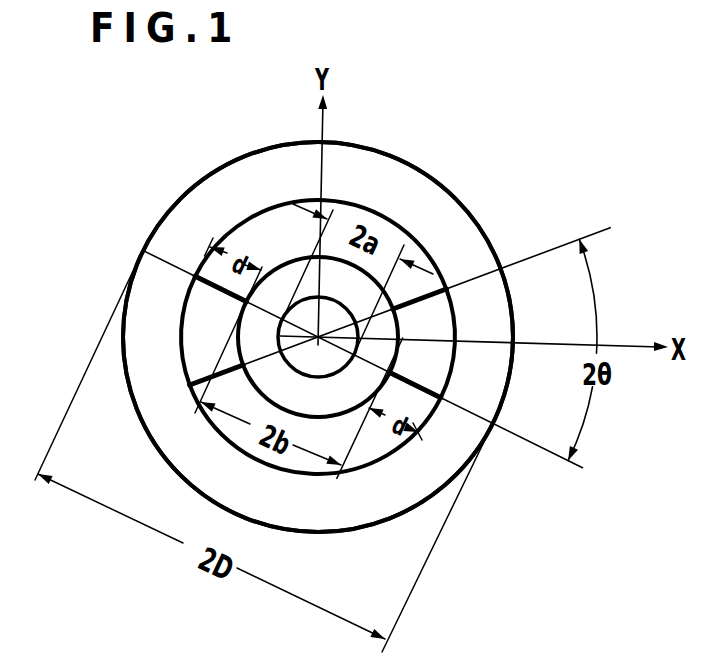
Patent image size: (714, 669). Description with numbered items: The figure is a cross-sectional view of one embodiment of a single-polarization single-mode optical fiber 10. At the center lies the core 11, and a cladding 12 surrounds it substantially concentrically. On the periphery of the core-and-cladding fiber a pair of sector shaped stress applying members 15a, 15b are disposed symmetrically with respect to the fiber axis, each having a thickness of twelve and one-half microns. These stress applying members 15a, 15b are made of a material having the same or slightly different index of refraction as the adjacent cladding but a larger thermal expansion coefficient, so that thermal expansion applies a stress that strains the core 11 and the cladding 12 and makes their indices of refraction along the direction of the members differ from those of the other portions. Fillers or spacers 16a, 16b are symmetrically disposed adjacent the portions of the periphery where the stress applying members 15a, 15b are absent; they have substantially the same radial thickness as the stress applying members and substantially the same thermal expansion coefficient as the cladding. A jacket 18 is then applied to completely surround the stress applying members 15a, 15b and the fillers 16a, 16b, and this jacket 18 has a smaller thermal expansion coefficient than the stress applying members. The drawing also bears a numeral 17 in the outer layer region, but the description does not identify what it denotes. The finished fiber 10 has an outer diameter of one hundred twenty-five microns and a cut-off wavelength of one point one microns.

The optical fiber 10 is at (478, 197).
The core 11 is at (326, 369).
The cladding 12 is at (282, 288).
The stress applying member 15a is at (200, 340).
The stress applying member 15b is at (427, 363).
The filler 16a is at (288, 223).
The filler 16b is at (365, 438).
The outer cladding layer 17 is at (155, 291).
The jacket 18 is at (385, 182).